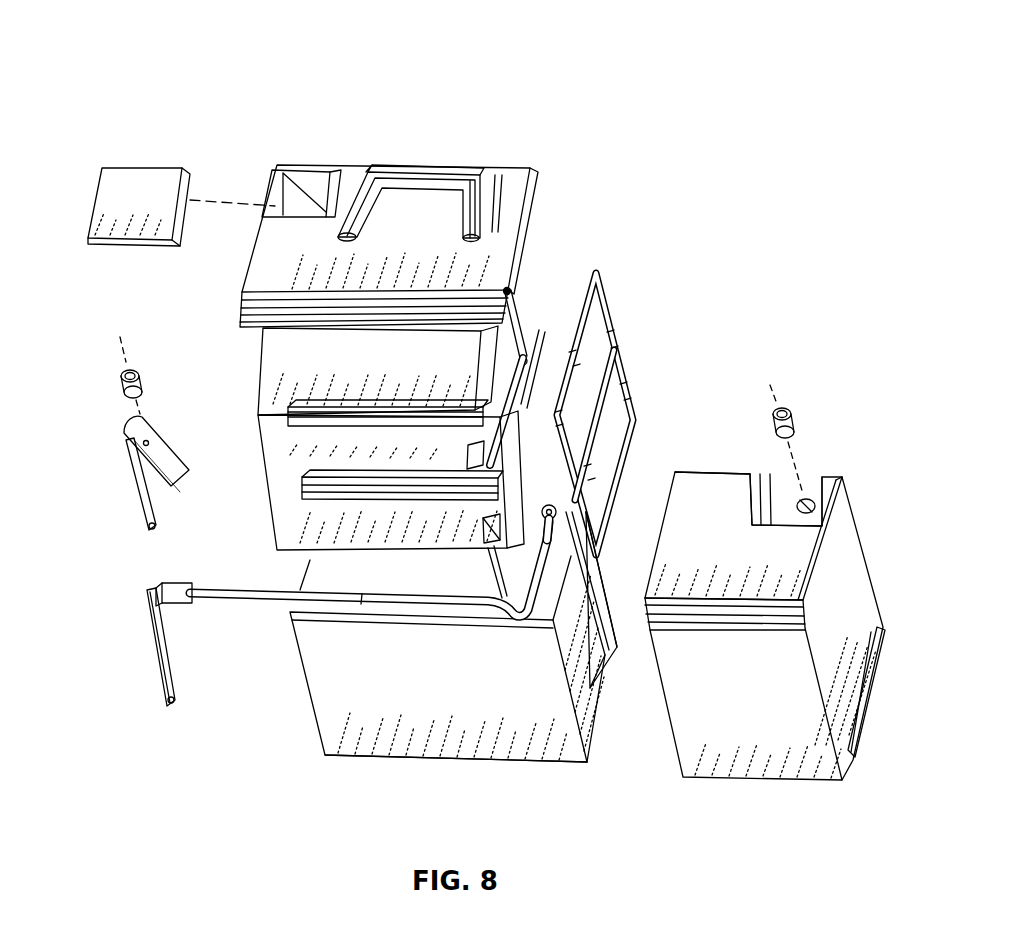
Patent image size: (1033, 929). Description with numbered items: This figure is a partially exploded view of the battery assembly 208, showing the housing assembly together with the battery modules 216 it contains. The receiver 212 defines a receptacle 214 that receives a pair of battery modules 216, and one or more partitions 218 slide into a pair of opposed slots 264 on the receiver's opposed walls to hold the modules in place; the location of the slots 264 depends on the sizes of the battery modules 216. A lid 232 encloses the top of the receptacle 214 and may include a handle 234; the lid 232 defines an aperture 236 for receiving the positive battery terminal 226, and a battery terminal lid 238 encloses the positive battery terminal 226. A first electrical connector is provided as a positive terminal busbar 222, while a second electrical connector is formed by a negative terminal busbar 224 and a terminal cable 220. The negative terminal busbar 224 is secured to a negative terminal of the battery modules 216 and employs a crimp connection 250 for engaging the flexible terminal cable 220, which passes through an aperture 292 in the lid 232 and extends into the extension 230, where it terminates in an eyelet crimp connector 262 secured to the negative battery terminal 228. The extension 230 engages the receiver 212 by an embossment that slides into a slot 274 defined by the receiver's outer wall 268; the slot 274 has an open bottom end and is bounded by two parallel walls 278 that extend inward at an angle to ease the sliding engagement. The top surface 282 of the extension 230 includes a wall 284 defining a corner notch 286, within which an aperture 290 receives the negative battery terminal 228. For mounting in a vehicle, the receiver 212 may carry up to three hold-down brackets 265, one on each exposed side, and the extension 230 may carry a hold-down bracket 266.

The battery assembly 208 is at (650, 102).
The receiver 212 is at (322, 703).
The receptacle 214 is at (293, 567).
The battery modules 216 is at (265, 358).
The partition 218 is at (635, 366).
The terminal cable 220 is at (452, 604).
The positive terminal busbar 222 is at (150, 440).
The negative terminal busbar 224 is at (174, 672).
The positive battery terminal 226 is at (122, 383).
The negative battery terminal 228 is at (796, 424).
The extension 230 is at (870, 616).
The lid 232 is at (524, 172).
The handle 234 is at (432, 168).
The aperture 236 is at (290, 176).
The battery terminal lid 238 is at (148, 180).
The crimp connection 250 is at (180, 605).
The eyelet crimp connector 262 is at (548, 504).
The slots 264 is at (492, 558).
The hold-down brackets 265 is at (314, 732).
The hold-down bracket 266 is at (858, 707).
The outer wall 268 is at (604, 576).
The slot 274 is at (608, 672).
The parallel walls 278 is at (605, 590).
The top surface 282 is at (684, 490).
The wall 284 is at (790, 485).
The corner notch 286 is at (844, 480).
The aperture 290 is at (812, 500).
The aperture 292 is at (513, 292).